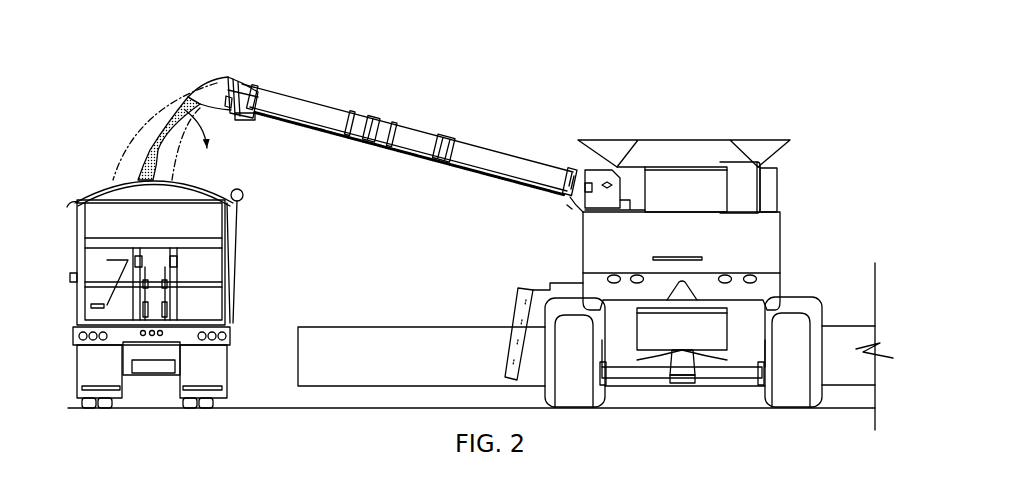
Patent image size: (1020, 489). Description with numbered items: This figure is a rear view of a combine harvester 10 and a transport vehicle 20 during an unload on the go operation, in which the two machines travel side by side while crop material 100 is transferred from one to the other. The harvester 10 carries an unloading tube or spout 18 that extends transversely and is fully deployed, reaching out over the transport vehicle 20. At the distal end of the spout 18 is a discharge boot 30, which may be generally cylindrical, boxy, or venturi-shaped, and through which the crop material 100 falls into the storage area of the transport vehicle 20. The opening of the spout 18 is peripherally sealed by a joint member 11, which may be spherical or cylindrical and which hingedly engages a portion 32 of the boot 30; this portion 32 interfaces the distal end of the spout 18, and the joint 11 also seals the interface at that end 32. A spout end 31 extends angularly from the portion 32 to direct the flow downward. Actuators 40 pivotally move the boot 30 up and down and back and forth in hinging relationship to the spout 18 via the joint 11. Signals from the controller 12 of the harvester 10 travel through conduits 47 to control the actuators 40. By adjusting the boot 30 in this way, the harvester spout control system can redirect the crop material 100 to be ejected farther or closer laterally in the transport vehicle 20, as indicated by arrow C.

The combine harvester 10 is at (800, 109).
The joint member 11 is at (243, 77).
The controller 12 is at (703, 188).
The unloading tube or spout 18 is at (409, 159).
The transport vehicle 20 is at (233, 250).
The discharge boot 30 is at (203, 68).
The spout end 31 is at (193, 90).
The portion of the boot 32 is at (239, 76).
The actuators 40 is at (229, 100).
The conduits 47 is at (320, 131).
The crop material 100 is at (143, 142).
The arrow C is at (140, 110).